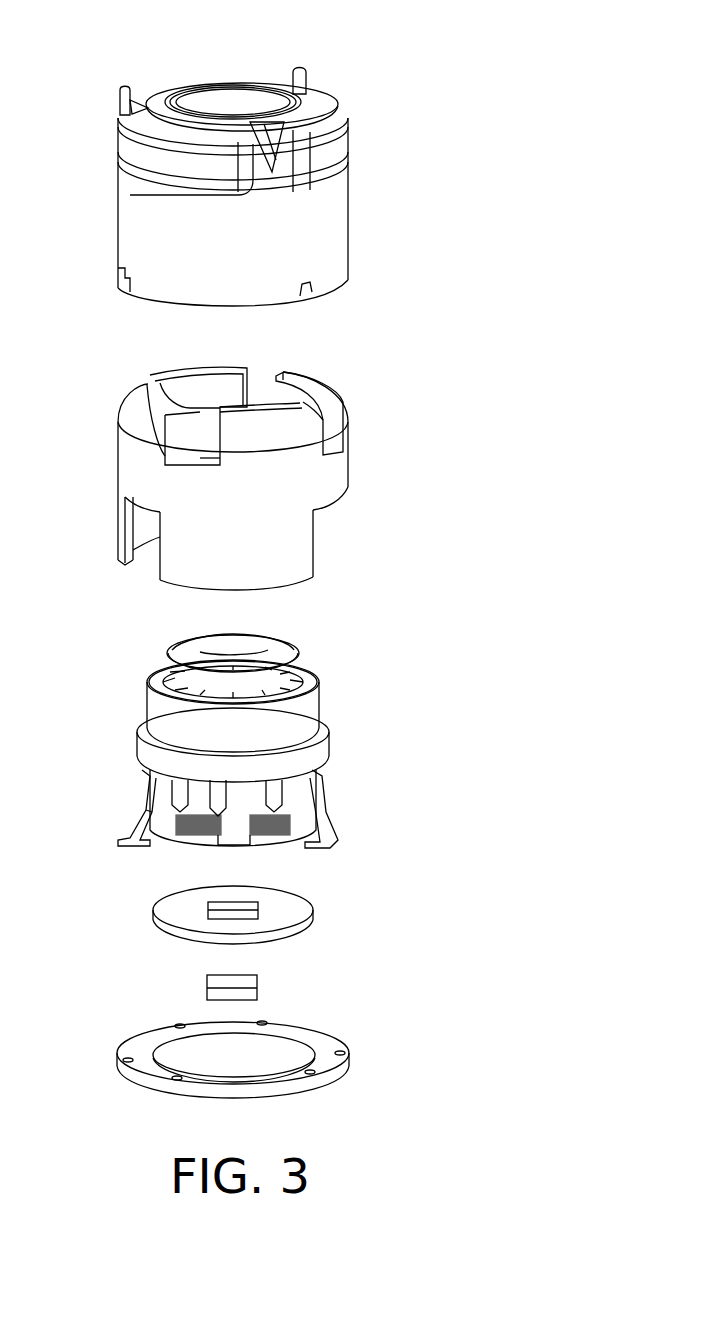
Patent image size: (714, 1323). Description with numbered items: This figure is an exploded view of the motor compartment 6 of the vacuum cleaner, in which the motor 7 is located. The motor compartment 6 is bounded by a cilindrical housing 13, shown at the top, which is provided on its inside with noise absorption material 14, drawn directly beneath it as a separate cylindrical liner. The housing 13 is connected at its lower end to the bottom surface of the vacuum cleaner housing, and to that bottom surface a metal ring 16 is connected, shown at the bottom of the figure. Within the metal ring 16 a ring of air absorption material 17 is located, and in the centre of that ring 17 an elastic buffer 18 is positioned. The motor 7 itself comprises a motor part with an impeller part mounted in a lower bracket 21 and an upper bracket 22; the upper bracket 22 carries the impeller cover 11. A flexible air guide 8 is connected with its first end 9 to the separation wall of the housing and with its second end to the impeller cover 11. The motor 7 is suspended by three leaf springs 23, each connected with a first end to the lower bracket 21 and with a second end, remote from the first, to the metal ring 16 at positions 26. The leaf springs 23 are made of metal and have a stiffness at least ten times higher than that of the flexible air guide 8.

The motor compartment 6 is at (488, 286).
The motor 7 is at (490, 668).
The flexible air guide 8 is at (262, 646).
The first end 9 is at (194, 82).
The impeller cover 11 is at (300, 670).
The cilindrical housing 13 is at (332, 221).
The noise absorption material 14 is at (330, 478).
The metal ring 16 is at (312, 1038).
The ring of air absorption material 17 is at (300, 903).
The elastic buffer 18 is at (207, 980).
The lower bracket 21 is at (305, 793).
The upper bracket 22 is at (305, 717).
The leaf springs 23 is at (145, 816).
The positions 26 is at (262, 1022).